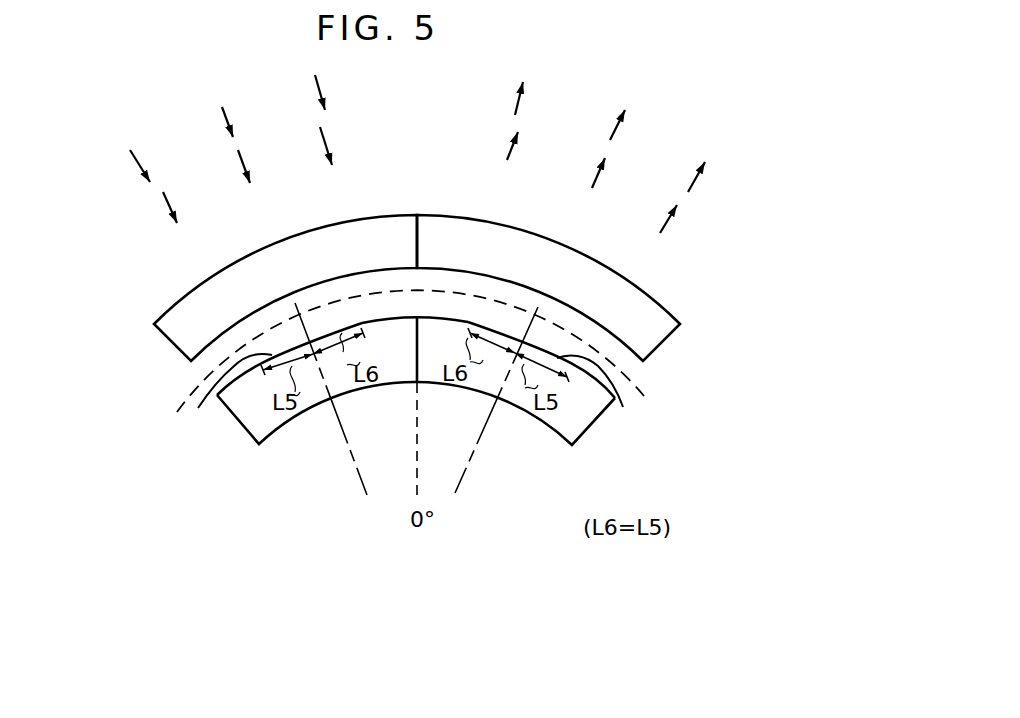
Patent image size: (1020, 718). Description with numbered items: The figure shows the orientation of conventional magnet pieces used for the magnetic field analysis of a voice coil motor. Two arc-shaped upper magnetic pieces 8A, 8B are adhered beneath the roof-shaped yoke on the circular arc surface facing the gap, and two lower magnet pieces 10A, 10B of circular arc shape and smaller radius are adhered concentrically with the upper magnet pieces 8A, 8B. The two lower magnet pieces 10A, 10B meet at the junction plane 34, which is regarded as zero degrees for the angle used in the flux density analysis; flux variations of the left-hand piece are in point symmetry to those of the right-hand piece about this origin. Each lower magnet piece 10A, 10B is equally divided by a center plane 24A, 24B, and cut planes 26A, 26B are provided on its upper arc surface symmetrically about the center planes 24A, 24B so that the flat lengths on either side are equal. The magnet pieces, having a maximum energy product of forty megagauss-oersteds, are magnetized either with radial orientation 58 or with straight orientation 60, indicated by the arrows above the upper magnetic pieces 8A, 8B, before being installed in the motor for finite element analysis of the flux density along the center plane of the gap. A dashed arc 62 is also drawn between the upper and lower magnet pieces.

The upper magnetic piece 8A is at (650, 348).
The upper magnetic piece 8B is at (183, 338).
The lower magnet piece 10A is at (578, 430).
The lower magnet piece 10B is at (243, 418).
The center plane 24A is at (467, 473).
The center plane 24B is at (352, 459).
The cut plane 26A is at (658, 410).
The cut plane 26B is at (183, 404).
The junction plane 34 is at (417, 363).
The radial orientation 58 is at (136, 162).
The straight orientation 60 is at (166, 212).
The boundary circle 62 is at (647, 393).